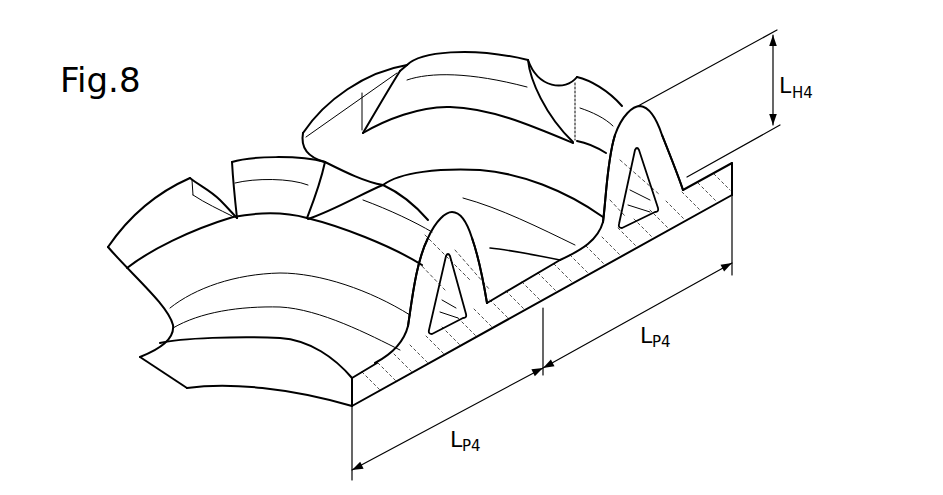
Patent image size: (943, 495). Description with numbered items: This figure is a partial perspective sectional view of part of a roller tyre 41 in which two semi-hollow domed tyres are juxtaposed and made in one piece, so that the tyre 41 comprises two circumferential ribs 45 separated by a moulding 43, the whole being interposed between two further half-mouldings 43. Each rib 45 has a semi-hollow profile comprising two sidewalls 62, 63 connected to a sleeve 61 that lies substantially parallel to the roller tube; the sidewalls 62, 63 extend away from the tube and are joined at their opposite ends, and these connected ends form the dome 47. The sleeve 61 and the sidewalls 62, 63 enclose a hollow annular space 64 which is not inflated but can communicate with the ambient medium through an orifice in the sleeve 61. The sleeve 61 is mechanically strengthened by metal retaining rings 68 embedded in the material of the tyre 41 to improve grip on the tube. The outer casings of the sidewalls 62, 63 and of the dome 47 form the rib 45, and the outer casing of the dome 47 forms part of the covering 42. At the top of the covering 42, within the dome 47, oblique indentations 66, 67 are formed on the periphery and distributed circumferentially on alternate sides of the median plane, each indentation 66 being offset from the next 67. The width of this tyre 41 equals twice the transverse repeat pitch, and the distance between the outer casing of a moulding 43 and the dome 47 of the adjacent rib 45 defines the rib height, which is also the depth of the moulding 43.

The tyre 41 is at (657, 92).
The covering 42 is at (287, 72).
The moulding 43 is at (557, 277).
The circumferential rib 45 is at (193, 263).
The dome 47 is at (452, 230).
The sleeve 61 is at (448, 328).
The sidewall 62 is at (418, 289).
The sidewall 63 is at (472, 262).
The hollow annular space 64 is at (449, 300).
The indentation 66 is at (226, 197).
The indentation 67 is at (382, 87).
The metal retaining ring 68 is at (708, 190).